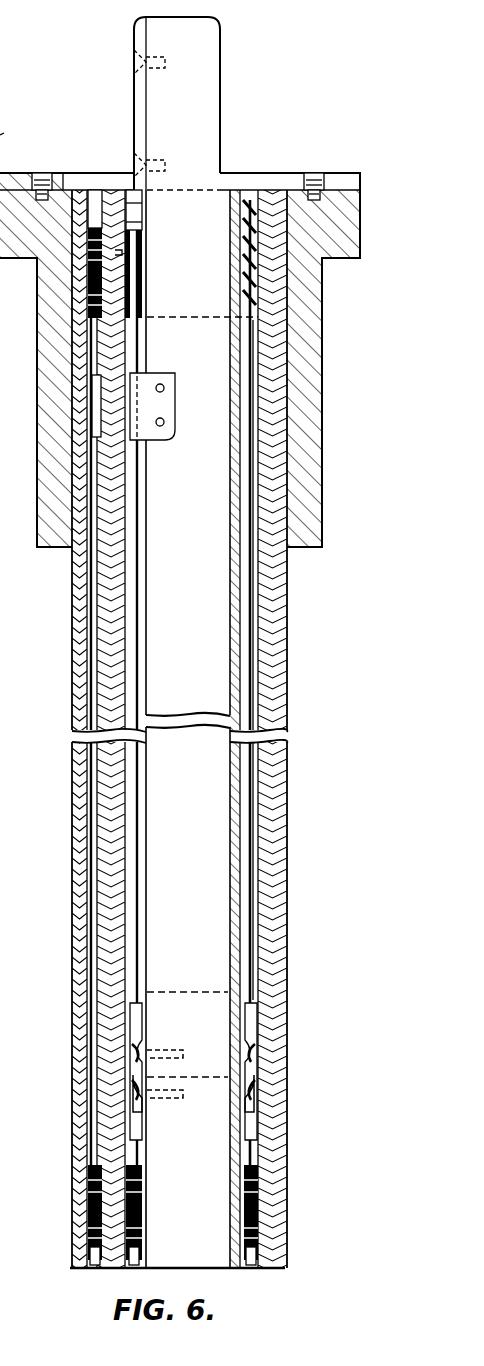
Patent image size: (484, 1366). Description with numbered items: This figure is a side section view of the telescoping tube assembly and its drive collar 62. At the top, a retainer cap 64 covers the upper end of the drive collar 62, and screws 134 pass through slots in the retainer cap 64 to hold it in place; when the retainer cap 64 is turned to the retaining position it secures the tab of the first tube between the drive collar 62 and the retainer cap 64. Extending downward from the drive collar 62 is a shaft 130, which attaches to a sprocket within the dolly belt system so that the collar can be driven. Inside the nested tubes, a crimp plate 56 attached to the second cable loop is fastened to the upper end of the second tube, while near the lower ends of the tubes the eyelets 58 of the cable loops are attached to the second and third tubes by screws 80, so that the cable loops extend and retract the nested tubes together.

The screws 134 is at (312, 173).
The retainer cap 64 is at (358, 233).
The drive collar 62 is at (318, 375).
The shaft 130 is at (322, 490).
The crimp plate 56 is at (95, 432).
The screws 80 is at (135, 1097).
The eyelets 58 is at (135, 1122).